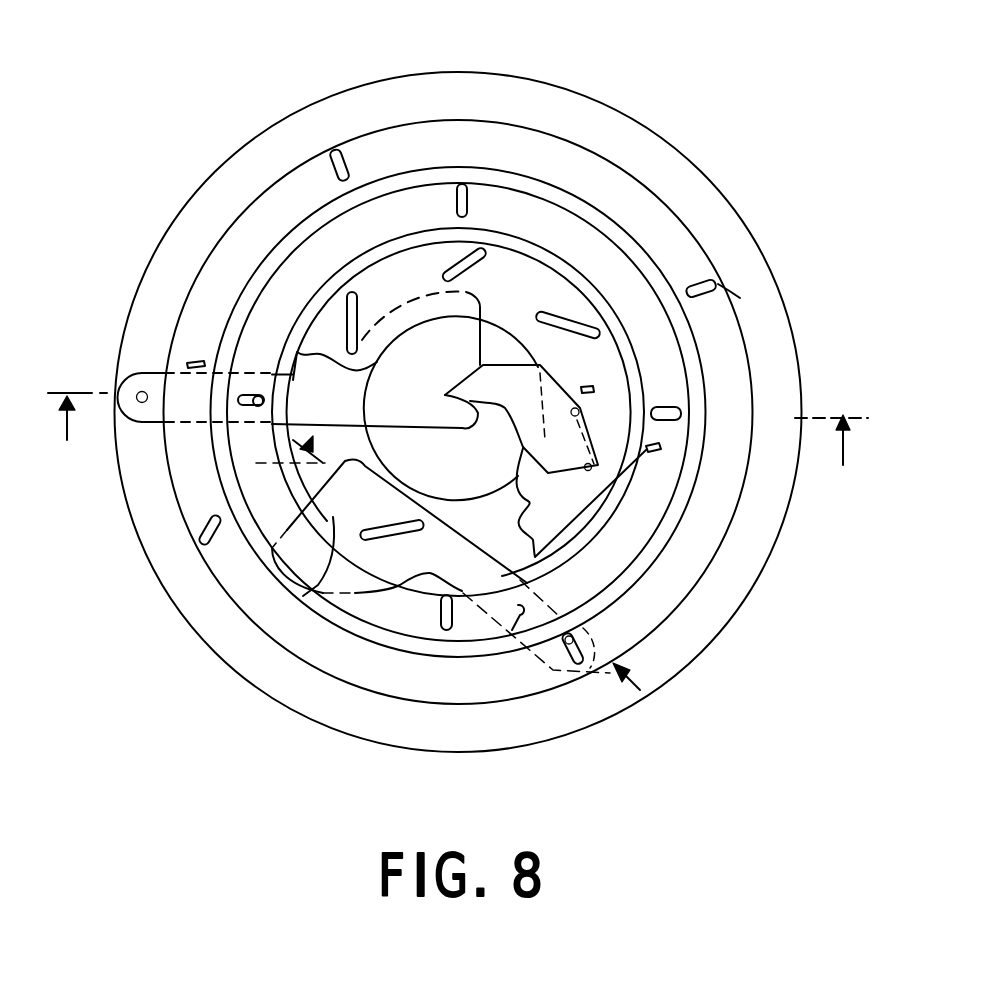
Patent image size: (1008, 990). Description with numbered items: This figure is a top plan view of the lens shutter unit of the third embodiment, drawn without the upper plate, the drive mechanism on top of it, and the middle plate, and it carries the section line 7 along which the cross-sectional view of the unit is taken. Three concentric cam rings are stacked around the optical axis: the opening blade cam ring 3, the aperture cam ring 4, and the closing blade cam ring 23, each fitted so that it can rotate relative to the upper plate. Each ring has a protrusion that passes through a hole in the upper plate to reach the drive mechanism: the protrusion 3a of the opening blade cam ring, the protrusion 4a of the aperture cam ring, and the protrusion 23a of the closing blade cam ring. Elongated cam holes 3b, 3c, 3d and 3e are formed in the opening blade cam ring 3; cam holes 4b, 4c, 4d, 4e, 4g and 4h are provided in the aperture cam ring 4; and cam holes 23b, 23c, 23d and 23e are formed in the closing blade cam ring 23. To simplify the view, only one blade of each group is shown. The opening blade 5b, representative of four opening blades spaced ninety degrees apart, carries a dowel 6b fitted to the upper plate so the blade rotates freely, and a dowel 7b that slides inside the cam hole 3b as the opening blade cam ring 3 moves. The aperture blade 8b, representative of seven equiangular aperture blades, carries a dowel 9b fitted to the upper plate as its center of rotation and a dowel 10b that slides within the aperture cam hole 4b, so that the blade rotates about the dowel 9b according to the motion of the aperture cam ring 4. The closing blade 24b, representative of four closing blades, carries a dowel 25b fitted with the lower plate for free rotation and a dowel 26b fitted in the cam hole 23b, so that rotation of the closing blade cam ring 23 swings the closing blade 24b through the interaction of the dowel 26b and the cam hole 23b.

The closing blade cam ring 23 is at (447, 130).
The protrusion 23a is at (196, 360).
The cam hole 23b is at (566, 648).
The cam hole 23c is at (716, 293).
The cam hole 23d is at (347, 151).
The cam hole 23e is at (205, 546).
The opening blade cam ring 3 is at (545, 212).
The protrusion 3a is at (660, 450).
The cam hole 3b is at (143, 391).
The cam hole 3c is at (447, 631).
The cam hole 3d is at (681, 406).
The cam hole 3e is at (468, 190).
The aperture cam ring 4 is at (621, 260).
The protrusion 4a is at (710, 287).
The aperture cam hole 4b is at (600, 462).
The cam hole 4c is at (587, 388).
The cam hole 4d is at (533, 283).
The cam hole 4e is at (346, 292).
The cam hole 4g is at (387, 538).
The cam hole 4h is at (587, 608).
The opening blade 5b is at (252, 394).
The dowel 6b is at (139, 395).
The section line 7— 7 is at (652, 705).
The dowel 7b is at (258, 395).
The aperture blade 8b is at (560, 548).
The dowel 9b is at (592, 472).
The dowel 10b is at (582, 410).
The closing blade 24b is at (333, 518).
The dowel 25b is at (512, 632).
The dowel 26b is at (598, 628).